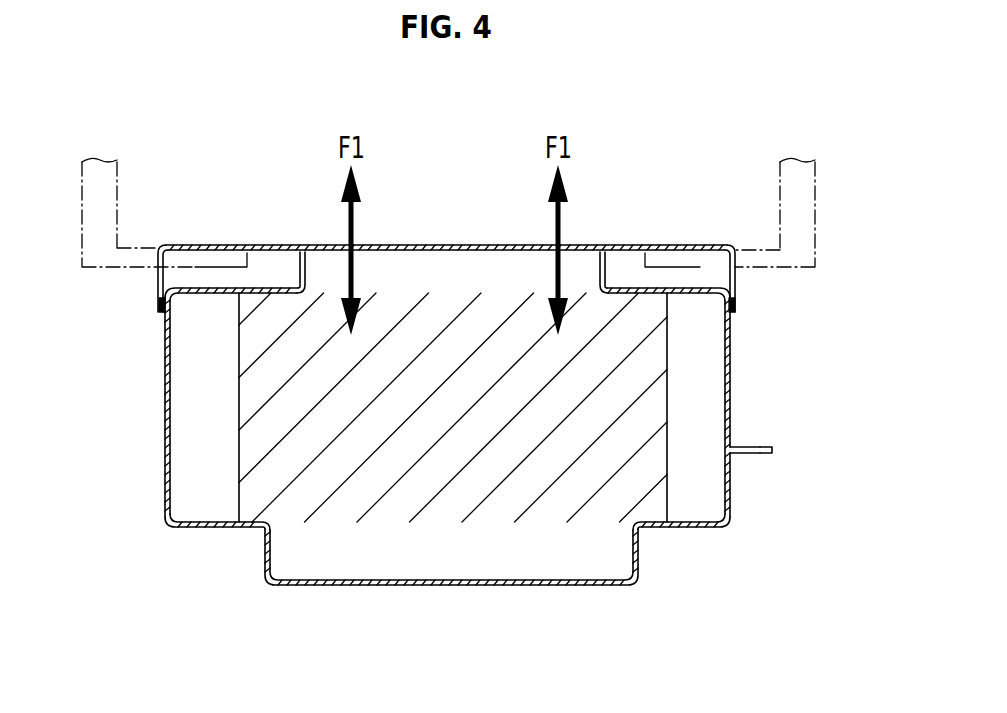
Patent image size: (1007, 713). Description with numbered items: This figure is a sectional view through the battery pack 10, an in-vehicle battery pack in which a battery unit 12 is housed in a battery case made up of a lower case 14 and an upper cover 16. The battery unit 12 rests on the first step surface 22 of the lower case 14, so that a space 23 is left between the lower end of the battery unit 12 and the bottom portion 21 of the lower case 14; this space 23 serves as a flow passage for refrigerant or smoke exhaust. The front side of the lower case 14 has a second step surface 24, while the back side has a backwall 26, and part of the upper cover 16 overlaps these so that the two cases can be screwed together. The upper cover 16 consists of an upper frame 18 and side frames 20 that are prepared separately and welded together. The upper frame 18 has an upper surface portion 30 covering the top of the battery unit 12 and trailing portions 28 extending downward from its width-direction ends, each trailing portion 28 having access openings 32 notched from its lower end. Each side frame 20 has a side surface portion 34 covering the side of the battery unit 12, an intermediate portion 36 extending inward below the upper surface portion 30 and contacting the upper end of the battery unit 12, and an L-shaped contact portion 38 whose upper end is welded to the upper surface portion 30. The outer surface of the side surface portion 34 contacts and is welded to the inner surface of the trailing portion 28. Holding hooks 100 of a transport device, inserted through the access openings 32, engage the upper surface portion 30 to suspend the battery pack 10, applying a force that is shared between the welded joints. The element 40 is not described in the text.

The battery pack 10 is at (311, 159).
The battery unit 12 is at (463, 417).
The lower case 14 is at (339, 608).
The upper cover 16 is at (450, 409).
The upper frame 18 is at (661, 217).
The side frame 20 is at (765, 338).
The bottom portion 21 is at (410, 587).
The first step surface 22 is at (223, 530).
The space 23 is at (463, 565).
The second step surface 24 is at (757, 458).
The backwall 26 is at (167, 438).
The trailing portion 28 is at (158, 272).
The upper surface portion 30 is at (437, 245).
The access opening 32 is at (184, 245).
The side surface portion 34 is at (162, 350).
The intermediate portion 36 is at (207, 297).
The contact portion 38 is at (300, 275).
The tab tip 40 is at (757, 444).
The holding hook 100 is at (140, 245).